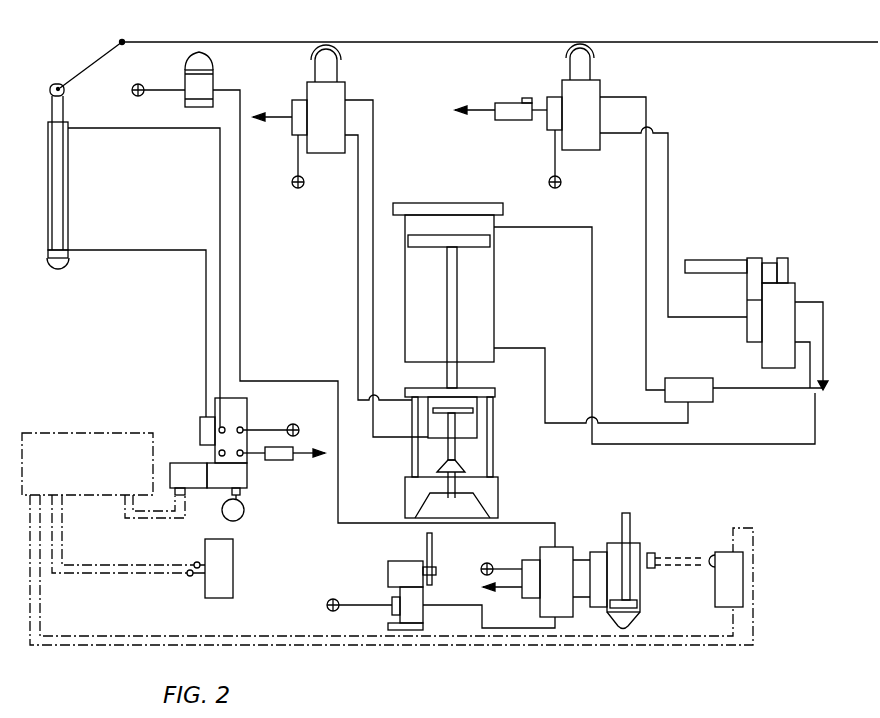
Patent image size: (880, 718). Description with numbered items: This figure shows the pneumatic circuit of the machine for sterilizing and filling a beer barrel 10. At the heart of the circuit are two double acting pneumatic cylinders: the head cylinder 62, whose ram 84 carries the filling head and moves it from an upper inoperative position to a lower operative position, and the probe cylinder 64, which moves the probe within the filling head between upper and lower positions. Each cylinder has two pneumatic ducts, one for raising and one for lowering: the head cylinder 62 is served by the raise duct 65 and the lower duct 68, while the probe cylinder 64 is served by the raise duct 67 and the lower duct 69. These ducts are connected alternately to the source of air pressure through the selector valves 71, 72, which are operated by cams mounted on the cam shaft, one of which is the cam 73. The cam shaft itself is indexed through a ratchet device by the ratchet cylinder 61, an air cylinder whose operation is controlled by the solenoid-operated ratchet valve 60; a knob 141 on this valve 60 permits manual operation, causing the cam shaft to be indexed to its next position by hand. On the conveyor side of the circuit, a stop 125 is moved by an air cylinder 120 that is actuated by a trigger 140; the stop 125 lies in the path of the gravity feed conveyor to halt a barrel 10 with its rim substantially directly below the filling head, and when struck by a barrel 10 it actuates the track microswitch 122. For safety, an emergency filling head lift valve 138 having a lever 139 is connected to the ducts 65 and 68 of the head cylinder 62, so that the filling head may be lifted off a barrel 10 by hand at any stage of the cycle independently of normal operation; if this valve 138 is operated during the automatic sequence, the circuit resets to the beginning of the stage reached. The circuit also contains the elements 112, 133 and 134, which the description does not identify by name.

The beer barrel 10 is at (213, 67).
The ratchet valve 60 is at (245, 423).
The ratchet cylinder 61 is at (67, 203).
The head cylinder 62 is at (493, 287).
The probe cylinder 64 is at (476, 453).
The raise duct 65 is at (546, 393).
The raise duct 67 is at (377, 200).
The lower duct 68 is at (592, 238).
The lower duct 69 is at (358, 233).
The selector valve 71 is at (550, 116).
The selector valve 72 is at (340, 92).
The cam 73 is at (569, 60).
The ram 84 is at (457, 373).
The valve head 112 is at (470, 427).
The air cylinder 120 is at (593, 561).
The track microswitch 122 is at (713, 600).
The stop 125 is at (630, 518).
The switch 133 is at (233, 590).
The control unit 134 is at (130, 442).
The emergency filling head lift valve 138 is at (762, 355).
The lever 139 is at (735, 248).
The trigger 140 is at (432, 553).
The knob 141 is at (244, 510).